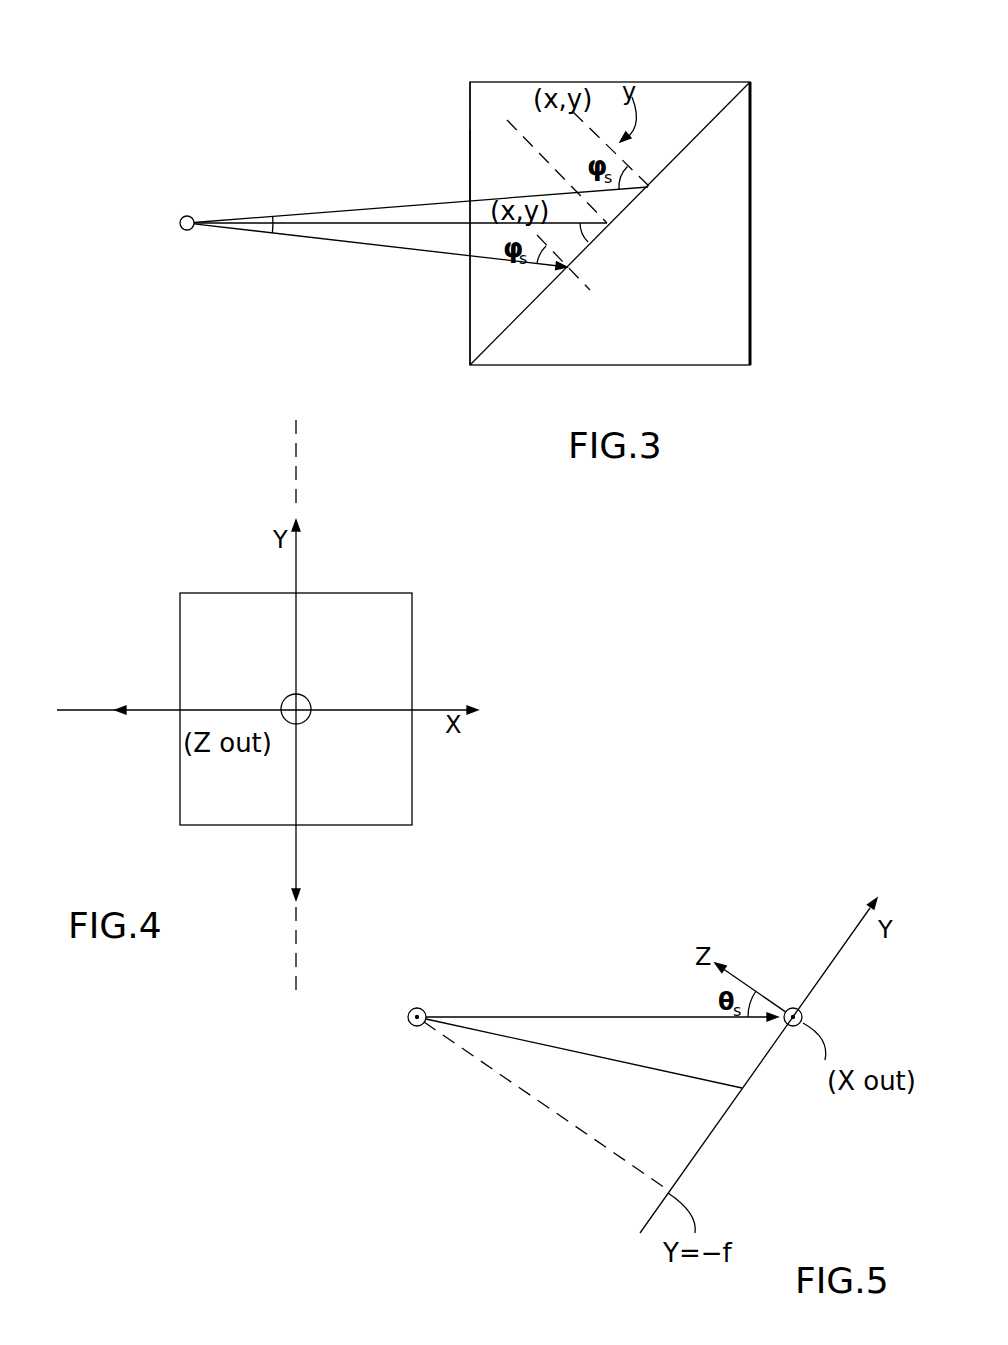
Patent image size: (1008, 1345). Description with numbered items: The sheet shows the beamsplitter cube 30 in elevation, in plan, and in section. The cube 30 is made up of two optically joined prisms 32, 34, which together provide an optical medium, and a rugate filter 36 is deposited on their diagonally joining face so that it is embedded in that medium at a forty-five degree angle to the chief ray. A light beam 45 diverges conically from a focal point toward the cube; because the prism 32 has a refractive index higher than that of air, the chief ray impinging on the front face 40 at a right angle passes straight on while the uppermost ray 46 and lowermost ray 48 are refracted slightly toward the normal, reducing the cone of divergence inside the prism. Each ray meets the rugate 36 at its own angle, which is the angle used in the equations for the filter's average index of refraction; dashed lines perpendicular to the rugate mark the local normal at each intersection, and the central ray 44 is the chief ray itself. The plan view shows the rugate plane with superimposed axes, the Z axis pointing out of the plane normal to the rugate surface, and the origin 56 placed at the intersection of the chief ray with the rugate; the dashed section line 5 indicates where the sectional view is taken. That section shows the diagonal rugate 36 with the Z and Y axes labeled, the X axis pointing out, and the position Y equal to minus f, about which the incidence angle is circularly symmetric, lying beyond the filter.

In FIG. 3, the beamsplitter cube 30 is at (557, 40).
In FIG. 3, the prism 32 is at (483, 107).
In FIG. 3, the prism 34 is at (722, 340).
In FIG. 3, the rugate filter 36 is at (692, 137).
In FIG. 4, the rugate filter 36 is at (232, 627).
In FIG. 5, the rugate filter 36 is at (718, 1120).
In FIG. 3, the front face 40 is at (467, 162).
In FIG. 3, the central ray 44 is at (440, 225).
In FIG. 5, the central ray 44 is at (580, 1017).
In FIG. 3, the light beam 45 is at (225, 183).
In FIG. 3, the uppermost ray 46 is at (342, 205).
In FIG. 5, the uppermost ray 46 is at (580, 1053).
In FIG. 3, the lowermost ray 48 is at (400, 250).
In FIG. 4, the section line 5 is at (370, 452).
In FIG. 4, the origin 56 is at (307, 707).